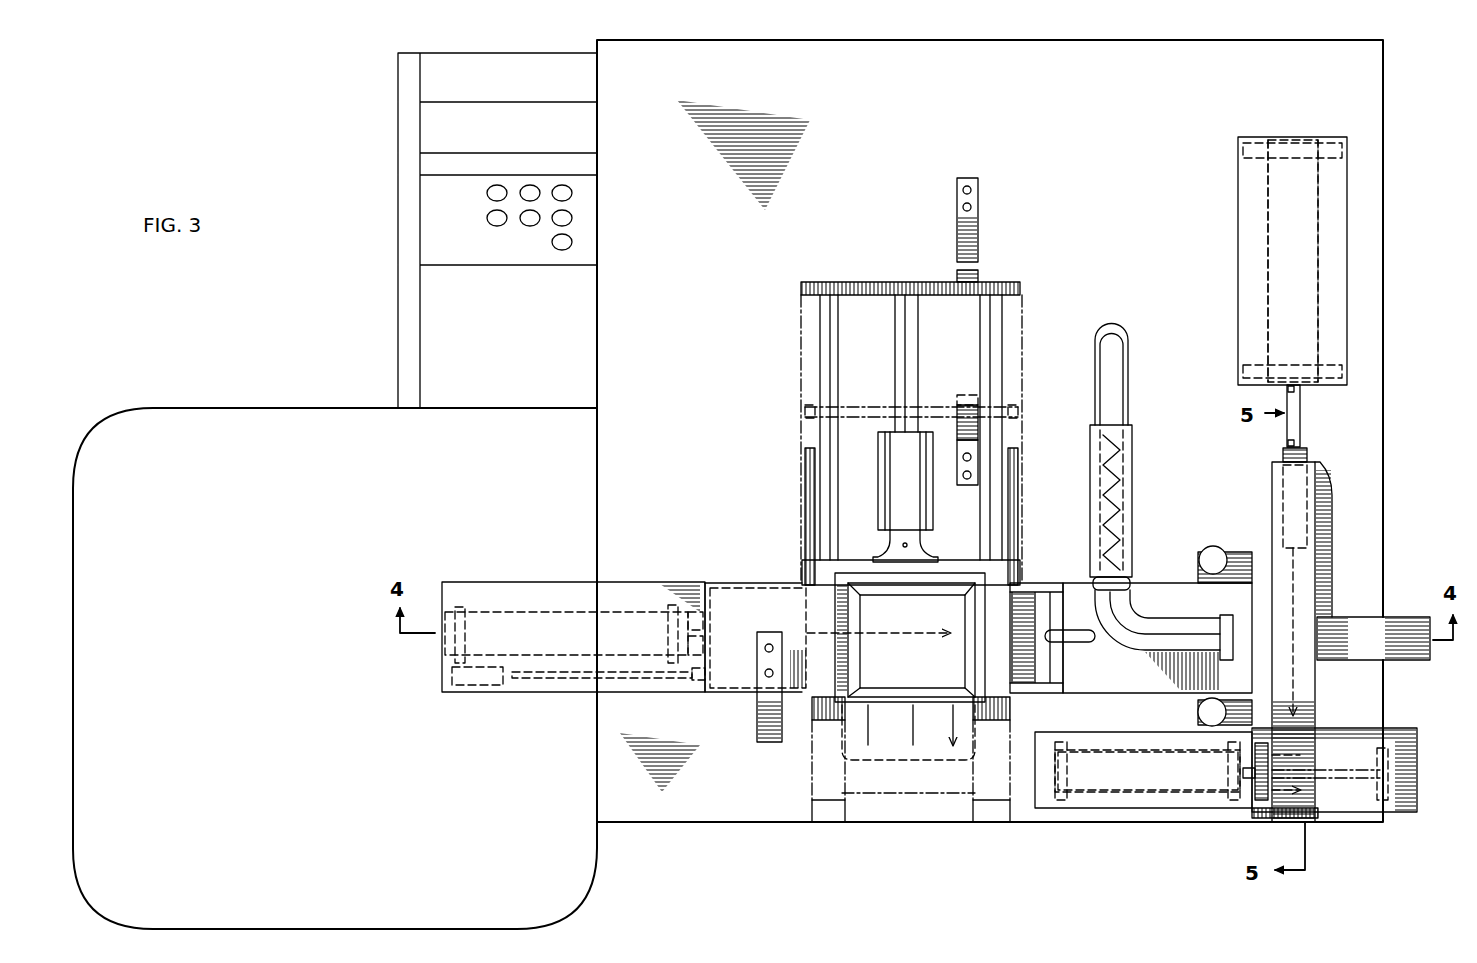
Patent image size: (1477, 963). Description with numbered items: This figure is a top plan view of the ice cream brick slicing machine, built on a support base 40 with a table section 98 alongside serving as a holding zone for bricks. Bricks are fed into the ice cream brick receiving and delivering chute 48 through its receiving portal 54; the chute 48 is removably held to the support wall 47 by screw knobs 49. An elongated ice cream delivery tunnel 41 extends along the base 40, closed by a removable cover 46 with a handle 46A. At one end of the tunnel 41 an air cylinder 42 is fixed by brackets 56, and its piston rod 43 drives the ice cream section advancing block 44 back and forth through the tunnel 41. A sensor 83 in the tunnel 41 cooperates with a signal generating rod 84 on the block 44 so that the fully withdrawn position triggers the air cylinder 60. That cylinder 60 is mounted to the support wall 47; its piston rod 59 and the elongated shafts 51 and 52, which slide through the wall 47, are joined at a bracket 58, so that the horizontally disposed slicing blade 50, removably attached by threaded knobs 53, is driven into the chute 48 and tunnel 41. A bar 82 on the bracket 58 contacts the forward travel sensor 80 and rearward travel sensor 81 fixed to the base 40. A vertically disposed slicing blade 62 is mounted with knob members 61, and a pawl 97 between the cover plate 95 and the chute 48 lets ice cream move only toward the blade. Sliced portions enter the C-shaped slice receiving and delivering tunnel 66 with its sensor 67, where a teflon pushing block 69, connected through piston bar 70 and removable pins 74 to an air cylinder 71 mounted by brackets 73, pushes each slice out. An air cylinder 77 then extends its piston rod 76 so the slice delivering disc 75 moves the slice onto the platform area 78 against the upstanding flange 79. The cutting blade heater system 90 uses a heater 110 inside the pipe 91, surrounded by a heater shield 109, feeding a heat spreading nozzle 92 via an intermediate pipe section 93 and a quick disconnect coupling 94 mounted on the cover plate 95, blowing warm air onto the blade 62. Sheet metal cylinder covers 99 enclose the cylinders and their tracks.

The support base 40 is at (931, 102).
The ice cream delivery tunnel 41 is at (680, 580).
The air cylinder 42 is at (498, 612).
The piston rod 43 is at (700, 628).
The ice cream section advancing block 44 is at (770, 595).
The cover 46 is at (525, 595).
The handle 46A is at (757, 702).
The support wall 47 is at (1012, 572).
The ice cream brick receiving and delivering chute 48 is at (965, 655).
The screw knobs 49 is at (1010, 708).
The ice cream brick slicing blade 50 is at (905, 822).
The elongated shaft 51 is at (820, 310).
The elongated shaft 52 is at (1002, 320).
The threaded knobs 53 is at (812, 810).
The ice cream brick receiving portal 54 is at (860, 628).
The brackets 56 is at (458, 607).
The bracket 58 is at (890, 282).
The piston rod 59 is at (918, 350).
The air cylinder 60 is at (878, 452).
The knob members 61 is at (1205, 548).
The ice cream slicing blade 62 is at (1245, 555).
The ice cream slice receiving and delivering tunnel 66 is at (1325, 585).
The sensor 67 is at (1392, 660).
The ice cream pushing block 69 is at (1290, 484).
The piston bar 70 is at (1300, 413).
The air cylinder 71 is at (1268, 258).
The brackets 73 is at (1325, 150).
The removable pins 74 is at (1300, 390).
The ice cream slice delivering disc 75 is at (1268, 752).
The piston rod 76 is at (1320, 780).
The air cylinder 77 is at (1105, 750).
The platform area 78 is at (1395, 730).
The upstanding flange 79 is at (1310, 818).
The forward travel sensor 80 is at (978, 425).
The rearward travel sensor 81 is at (978, 212).
The bar 82 is at (978, 276).
The sensor 83 is at (452, 676).
The signal generating rod 84 is at (560, 680).
The cutting blade heater system 90 is at (1128, 348).
The pipe 91 is at (1123, 390).
The heat spreading nozzle 92 is at (1225, 618).
The intermediate pipe section 93 is at (1128, 630).
The quick disconnect coupling 94 is at (1132, 586).
The cover plate 95 is at (1186, 611).
The pawl 97 is at (1052, 667).
The table section 98 is at (255, 692).
The cylinder covers 99 is at (1025, 358).
The heater shield 109 is at (1132, 452).
The heater 110 is at (1122, 495).